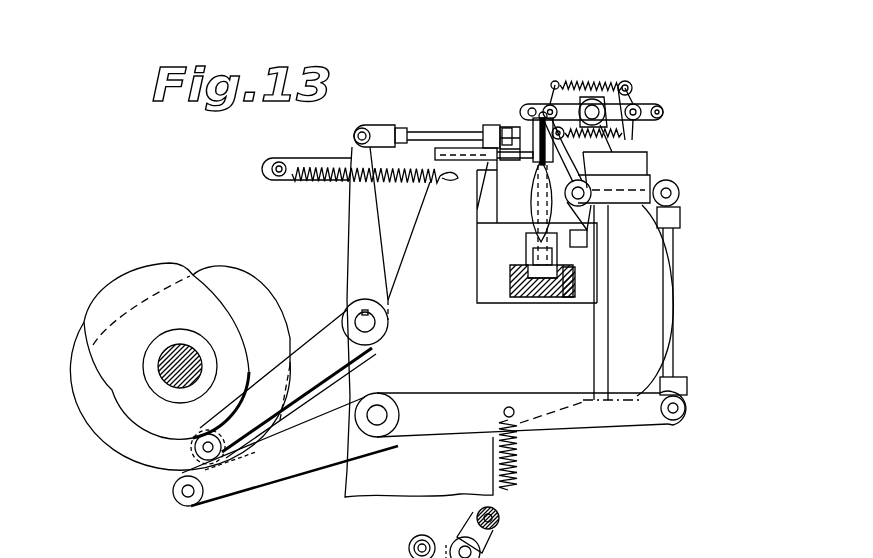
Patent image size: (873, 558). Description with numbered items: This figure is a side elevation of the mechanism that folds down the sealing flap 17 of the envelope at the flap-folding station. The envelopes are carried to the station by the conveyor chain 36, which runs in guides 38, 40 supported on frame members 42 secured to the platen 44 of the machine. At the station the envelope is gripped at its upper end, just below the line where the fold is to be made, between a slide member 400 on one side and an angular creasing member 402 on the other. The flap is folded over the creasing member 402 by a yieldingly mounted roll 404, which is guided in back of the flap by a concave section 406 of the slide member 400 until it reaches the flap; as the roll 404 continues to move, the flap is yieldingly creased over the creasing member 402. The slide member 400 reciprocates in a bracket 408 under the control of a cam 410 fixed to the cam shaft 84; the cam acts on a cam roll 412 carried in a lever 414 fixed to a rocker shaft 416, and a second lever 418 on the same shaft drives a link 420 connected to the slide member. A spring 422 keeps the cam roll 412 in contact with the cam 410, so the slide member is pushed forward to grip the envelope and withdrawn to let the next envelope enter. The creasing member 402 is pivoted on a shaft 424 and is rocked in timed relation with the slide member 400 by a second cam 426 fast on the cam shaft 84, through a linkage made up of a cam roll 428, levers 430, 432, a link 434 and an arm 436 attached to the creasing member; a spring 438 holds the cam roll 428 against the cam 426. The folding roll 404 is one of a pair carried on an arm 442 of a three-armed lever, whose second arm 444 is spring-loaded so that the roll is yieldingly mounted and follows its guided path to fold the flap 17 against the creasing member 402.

The flap 17 is at (535, 105).
The conveyor chain 36 is at (532, 253).
The guide 38 is at (510, 283).
The guide 40 is at (576, 287).
The frame member 42 is at (548, 295).
The platen 44 is at (609, 332).
The cam shaft 84 is at (172, 383).
The slide member 400 is at (518, 122).
The angular creasing member 402 is at (595, 153).
The yieldingly mounted roll 404 is at (540, 113).
The concave section 406 is at (532, 130).
The bracket 408 is at (411, 222).
The cam 410 is at (233, 328).
The cam roll 412 is at (196, 459).
The lever 414 is at (310, 343).
The rocker shaft 416 is at (372, 332).
The second lever 418 is at (347, 265).
The link 420 is at (425, 130).
The spring 422 is at (350, 162).
The shaft 424 is at (640, 178).
The cam 426 is at (85, 413).
The cam roll 428 is at (182, 507).
The lever 430 is at (250, 478).
The lever 432 is at (593, 425).
The link 434 is at (675, 348).
The arm 436 is at (680, 202).
The spring 438 is at (516, 460).
The arm 442 is at (487, 538).
The second arm 444 is at (436, 538).